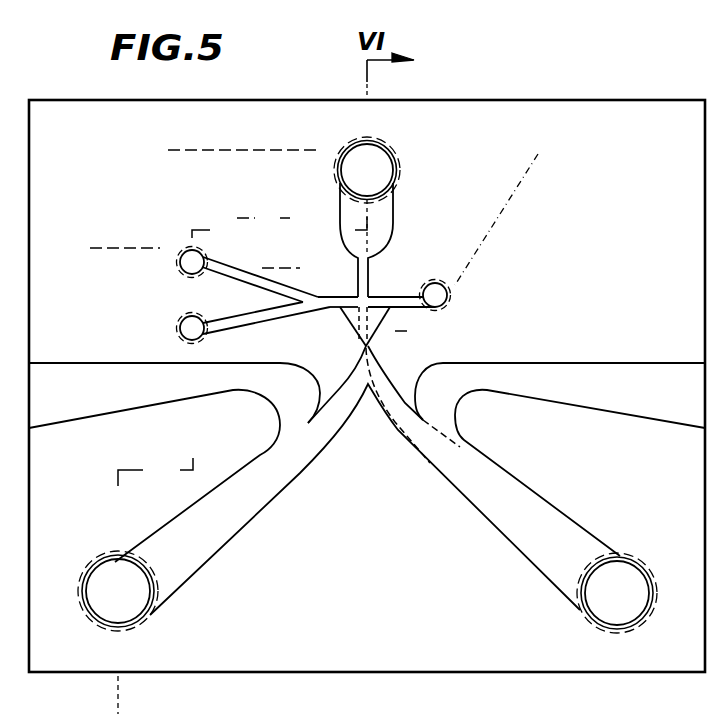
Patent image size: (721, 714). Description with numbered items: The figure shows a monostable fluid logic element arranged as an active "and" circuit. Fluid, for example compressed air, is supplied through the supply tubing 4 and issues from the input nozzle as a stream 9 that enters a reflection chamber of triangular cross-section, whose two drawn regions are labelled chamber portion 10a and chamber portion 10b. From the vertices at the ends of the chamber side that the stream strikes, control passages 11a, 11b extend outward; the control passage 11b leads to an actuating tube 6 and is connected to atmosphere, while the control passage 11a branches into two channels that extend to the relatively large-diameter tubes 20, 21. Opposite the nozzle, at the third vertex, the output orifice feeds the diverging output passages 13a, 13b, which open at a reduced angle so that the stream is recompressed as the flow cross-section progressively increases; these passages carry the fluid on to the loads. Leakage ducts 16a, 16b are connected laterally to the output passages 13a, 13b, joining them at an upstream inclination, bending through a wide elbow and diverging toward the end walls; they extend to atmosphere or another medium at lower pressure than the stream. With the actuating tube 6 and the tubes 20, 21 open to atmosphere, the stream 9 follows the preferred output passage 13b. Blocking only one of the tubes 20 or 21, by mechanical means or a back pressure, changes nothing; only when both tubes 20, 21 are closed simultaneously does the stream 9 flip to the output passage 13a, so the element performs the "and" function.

The supply tubing 4 is at (385, 150).
The actuating tube 6 is at (447, 287).
The stream 9 is at (401, 406).
The left junction channel wall 10a is at (352, 313).
The right junction channel wall 10b is at (377, 315).
The control passage 11a is at (326, 291).
The control passage 11b is at (388, 295).
The output passage 13a is at (210, 542).
The output passage 13b is at (512, 498).
The leakage duct 16a is at (108, 397).
The leakage duct 16b is at (613, 392).
The large-diameter tube 20 is at (190, 330).
The large-diameter tube 21 is at (190, 260).